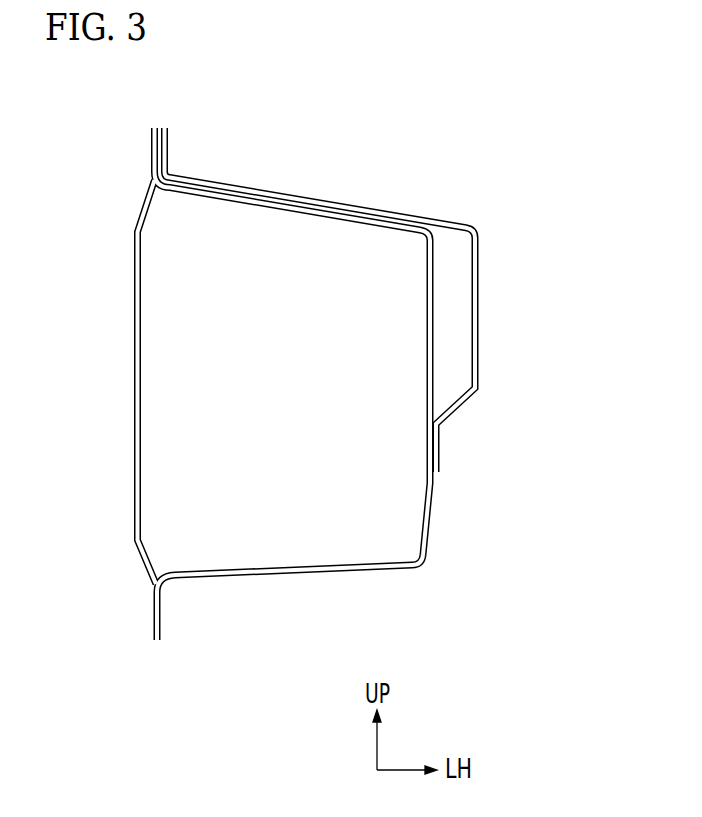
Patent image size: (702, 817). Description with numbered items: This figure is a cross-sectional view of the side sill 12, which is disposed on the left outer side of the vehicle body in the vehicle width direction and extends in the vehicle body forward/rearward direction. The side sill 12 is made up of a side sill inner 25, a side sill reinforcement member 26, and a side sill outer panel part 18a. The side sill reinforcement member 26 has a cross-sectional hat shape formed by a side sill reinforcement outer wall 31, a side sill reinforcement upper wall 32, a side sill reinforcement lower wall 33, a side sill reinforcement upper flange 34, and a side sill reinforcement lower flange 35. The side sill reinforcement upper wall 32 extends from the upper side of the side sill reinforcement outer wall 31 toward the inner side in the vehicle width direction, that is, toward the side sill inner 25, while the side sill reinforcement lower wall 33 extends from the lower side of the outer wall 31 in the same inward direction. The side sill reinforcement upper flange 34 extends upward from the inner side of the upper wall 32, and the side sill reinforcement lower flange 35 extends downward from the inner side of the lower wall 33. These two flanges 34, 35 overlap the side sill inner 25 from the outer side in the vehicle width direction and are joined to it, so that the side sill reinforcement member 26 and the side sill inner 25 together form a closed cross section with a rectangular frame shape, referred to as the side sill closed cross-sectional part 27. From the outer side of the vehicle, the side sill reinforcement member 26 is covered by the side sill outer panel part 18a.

The side sill 12 is at (320, 399).
The side sill outer panel part 18a is at (478, 260).
The side sill inner 25 is at (136, 312).
The side sill reinforcement member 26 is at (436, 303).
The side sill closed cross-sectional part 27 is at (387, 220).
The side sill reinforcement outer wall 31 is at (433, 375).
The side sill reinforcement upper wall 32 is at (303, 197).
The side sill reinforcement lower wall 33 is at (290, 573).
The side sill reinforcement upper flange 34 is at (163, 143).
The side sill reinforcement lower flange 35 is at (164, 612).